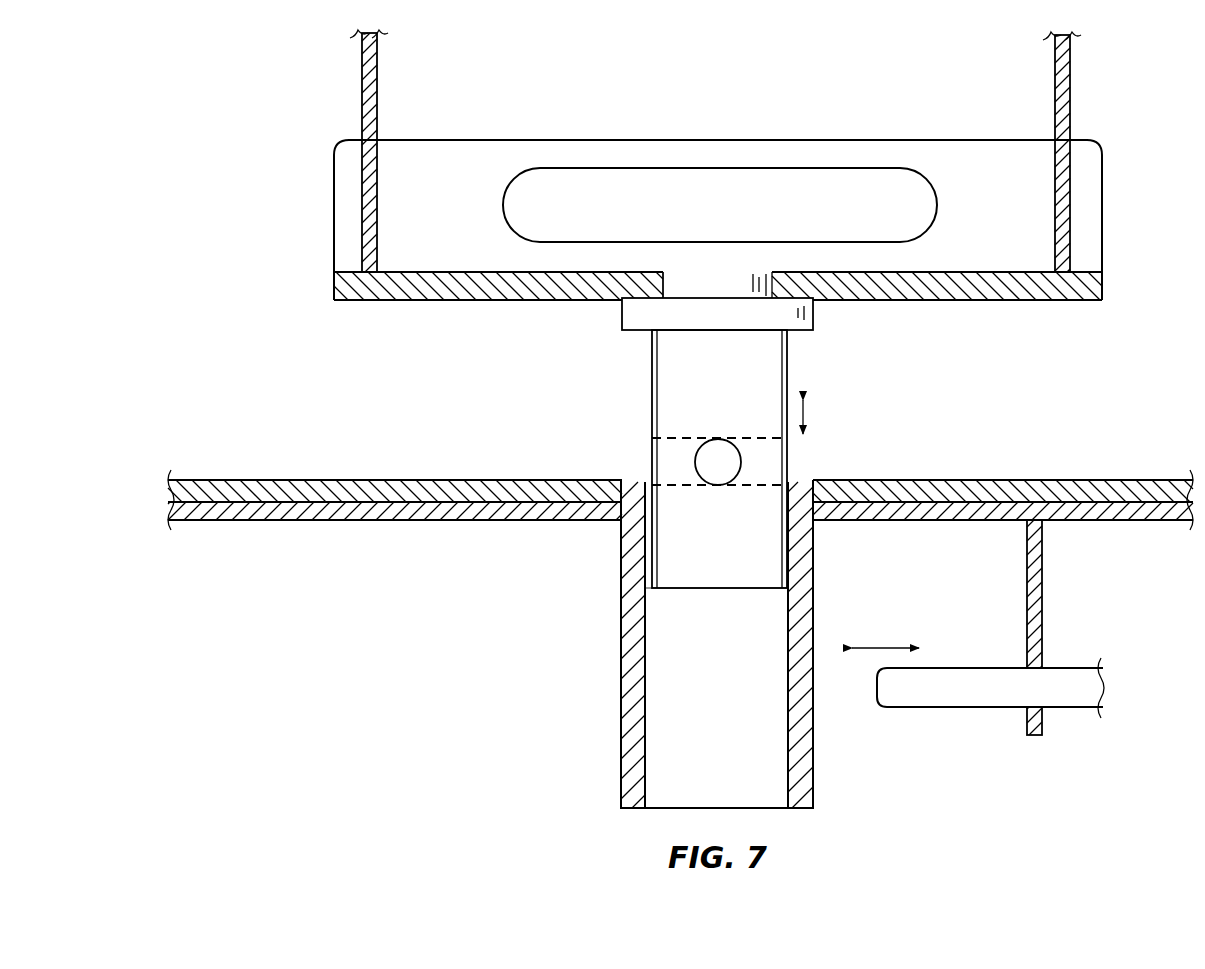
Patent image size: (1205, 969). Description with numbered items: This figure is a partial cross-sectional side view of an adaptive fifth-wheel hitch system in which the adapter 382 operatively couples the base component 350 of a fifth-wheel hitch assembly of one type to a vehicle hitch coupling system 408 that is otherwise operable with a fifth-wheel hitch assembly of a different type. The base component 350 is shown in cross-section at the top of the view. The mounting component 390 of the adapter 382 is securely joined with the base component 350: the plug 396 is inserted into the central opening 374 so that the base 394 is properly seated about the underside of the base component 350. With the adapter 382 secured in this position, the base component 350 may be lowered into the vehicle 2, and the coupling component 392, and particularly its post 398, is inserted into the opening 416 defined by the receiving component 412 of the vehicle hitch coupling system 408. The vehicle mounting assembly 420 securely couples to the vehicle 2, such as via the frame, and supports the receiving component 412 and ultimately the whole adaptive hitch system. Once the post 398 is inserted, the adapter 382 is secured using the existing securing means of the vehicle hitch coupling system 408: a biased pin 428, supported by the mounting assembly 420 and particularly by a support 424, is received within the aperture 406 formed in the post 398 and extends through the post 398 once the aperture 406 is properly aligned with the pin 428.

The vehicle 2 is at (275, 488).
The base component 350 is at (1103, 181).
The central opening 374 is at (666, 258).
The adapter 382 is at (645, 342).
The mounting component 390 is at (613, 301).
The coupling component 392 is at (648, 415).
The base 394 is at (806, 313).
The plug 396 is at (731, 280).
The post 398 is at (773, 363).
The aperture 406 is at (765, 463).
The vehicle hitch coupling system 408 is at (600, 532).
The receiving component 412 is at (633, 601).
The opening 416 is at (672, 665).
The vehicle mounting assembly 420 is at (390, 510).
The support 424 is at (1037, 585).
The biased pin 428 is at (940, 690).